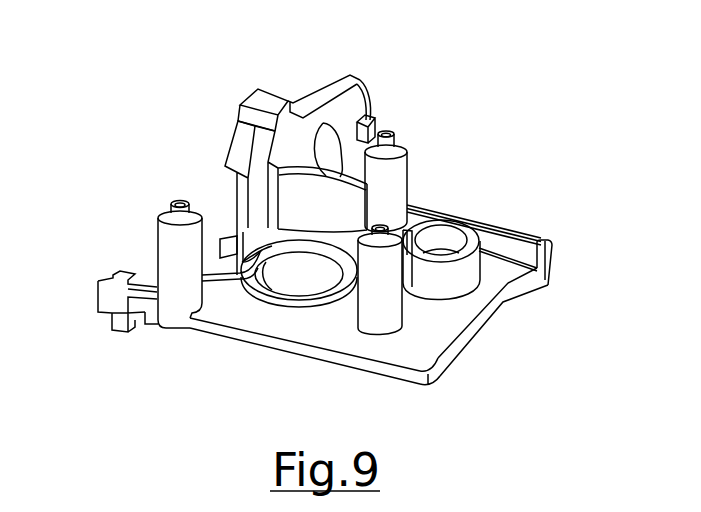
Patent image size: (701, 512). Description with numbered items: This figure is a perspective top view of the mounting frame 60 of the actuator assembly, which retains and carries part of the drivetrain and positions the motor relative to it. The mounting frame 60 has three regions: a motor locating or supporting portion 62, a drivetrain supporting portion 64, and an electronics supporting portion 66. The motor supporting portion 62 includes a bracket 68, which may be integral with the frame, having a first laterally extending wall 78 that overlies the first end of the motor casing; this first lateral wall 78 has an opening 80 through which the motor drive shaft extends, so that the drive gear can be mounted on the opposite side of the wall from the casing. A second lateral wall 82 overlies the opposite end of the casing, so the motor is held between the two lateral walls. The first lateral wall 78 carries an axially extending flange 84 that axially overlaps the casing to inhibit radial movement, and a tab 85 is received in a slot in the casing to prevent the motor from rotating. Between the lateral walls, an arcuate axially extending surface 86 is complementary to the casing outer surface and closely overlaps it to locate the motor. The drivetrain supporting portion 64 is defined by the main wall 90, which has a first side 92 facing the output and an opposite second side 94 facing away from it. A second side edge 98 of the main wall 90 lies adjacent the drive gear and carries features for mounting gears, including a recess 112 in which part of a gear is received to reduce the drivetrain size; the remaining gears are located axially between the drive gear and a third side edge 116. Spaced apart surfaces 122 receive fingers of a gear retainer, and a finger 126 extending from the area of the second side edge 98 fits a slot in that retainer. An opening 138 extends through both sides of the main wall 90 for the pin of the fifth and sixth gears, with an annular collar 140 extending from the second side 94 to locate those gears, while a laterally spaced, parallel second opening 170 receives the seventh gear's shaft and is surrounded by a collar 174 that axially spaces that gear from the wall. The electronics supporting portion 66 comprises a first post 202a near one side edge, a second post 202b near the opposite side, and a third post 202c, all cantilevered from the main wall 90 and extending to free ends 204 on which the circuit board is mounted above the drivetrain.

The mounting frame 60 is at (610, 68).
The motor locating or supporting portion 62 is at (403, 118).
The drivetrain supporting portion 64 is at (278, 354).
The electronics supporting portion 66 is at (168, 197).
The bracket 68 is at (378, 78).
The first laterally extending wall 78 is at (343, 74).
The opening 80 is at (320, 122).
The second lateral wall 82 is at (555, 277).
The axially extending flange 84 is at (375, 100).
The tab 85 is at (376, 119).
The axially extending surface 86 is at (445, 243).
The main wall 90 is at (449, 372).
The first side 92 is at (470, 345).
The second side 94 is at (480, 312).
The second side edge 98 is at (247, 210).
The recess 112 is at (221, 270).
The third side edge 116 is at (512, 292).
The spaced apart surfaces 122 is at (268, 98).
The finger 126 is at (98, 283).
The opening 138 is at (297, 282).
The annular collar 140 is at (330, 292).
The second opening 170 is at (463, 268).
The collar 174 is at (543, 237).
The first post 202a is at (163, 242).
The second post 202b is at (397, 176).
The third post 202c is at (382, 306).
The free ends 204 is at (181, 200).